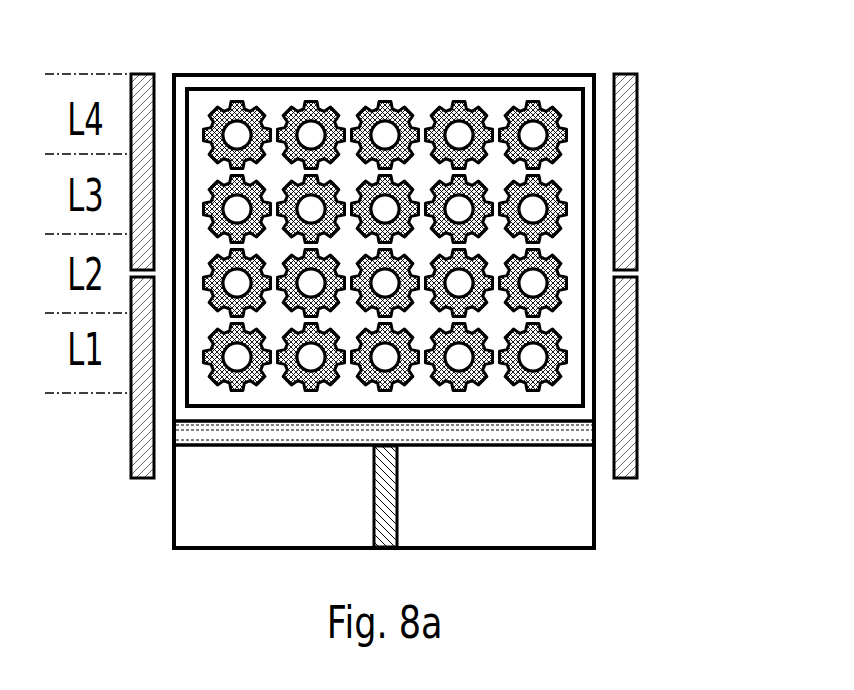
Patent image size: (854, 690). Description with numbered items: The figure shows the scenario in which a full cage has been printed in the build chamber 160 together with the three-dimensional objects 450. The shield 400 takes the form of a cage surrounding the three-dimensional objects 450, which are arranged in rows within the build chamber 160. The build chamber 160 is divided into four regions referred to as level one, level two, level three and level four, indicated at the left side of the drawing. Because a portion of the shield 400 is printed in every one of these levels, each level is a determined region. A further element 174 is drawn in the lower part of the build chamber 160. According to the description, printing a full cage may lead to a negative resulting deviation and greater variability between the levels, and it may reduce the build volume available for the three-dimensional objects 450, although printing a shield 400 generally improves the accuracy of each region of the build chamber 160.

The build chamber 160 is at (596, 519).
The support post 174 is at (442, 447).
The shield 400 is at (537, 88).
The 3D objects 450 is at (567, 213).